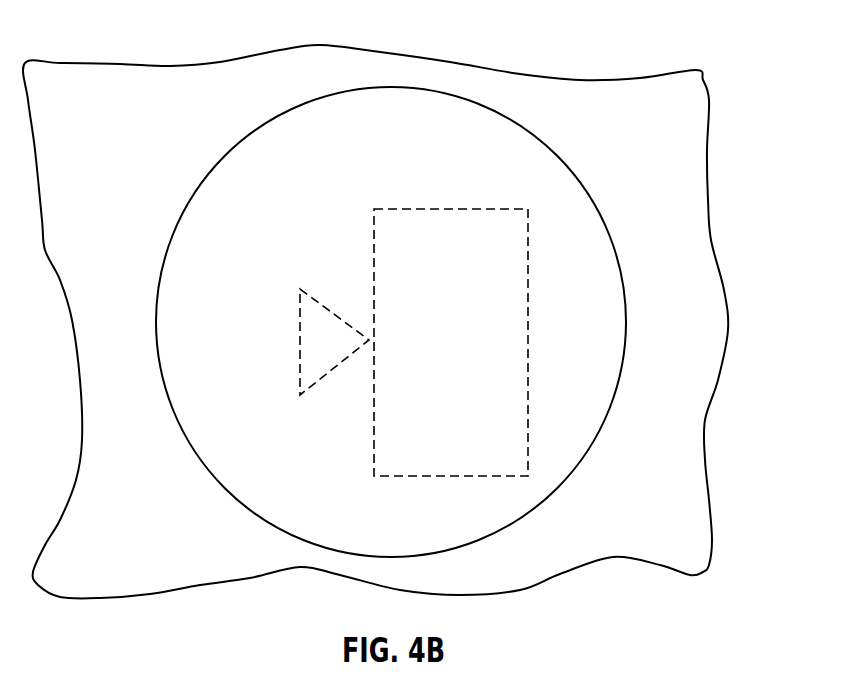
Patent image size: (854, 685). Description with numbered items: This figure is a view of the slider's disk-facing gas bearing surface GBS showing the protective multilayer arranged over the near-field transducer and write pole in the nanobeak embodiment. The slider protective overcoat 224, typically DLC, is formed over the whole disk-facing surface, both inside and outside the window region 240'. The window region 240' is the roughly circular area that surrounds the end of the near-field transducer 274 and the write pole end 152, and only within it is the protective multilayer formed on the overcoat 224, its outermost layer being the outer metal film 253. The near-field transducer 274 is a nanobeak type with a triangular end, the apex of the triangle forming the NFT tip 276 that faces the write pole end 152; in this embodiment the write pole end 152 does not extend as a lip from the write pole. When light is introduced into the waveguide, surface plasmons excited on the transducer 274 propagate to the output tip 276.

The slider protective overcoat 224 is at (688, 133).
The gas bearing surface GBS is at (697, 236).
The window region 240' is at (391, 322).
The outer metal film 253 is at (436, 113).
The write pole end 152 is at (473, 218).
The near-field transducer 274 is at (306, 328).
The NFT tip 276 is at (372, 343).